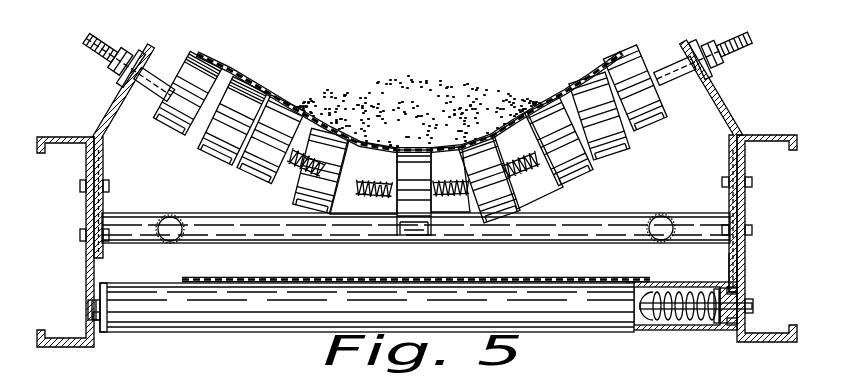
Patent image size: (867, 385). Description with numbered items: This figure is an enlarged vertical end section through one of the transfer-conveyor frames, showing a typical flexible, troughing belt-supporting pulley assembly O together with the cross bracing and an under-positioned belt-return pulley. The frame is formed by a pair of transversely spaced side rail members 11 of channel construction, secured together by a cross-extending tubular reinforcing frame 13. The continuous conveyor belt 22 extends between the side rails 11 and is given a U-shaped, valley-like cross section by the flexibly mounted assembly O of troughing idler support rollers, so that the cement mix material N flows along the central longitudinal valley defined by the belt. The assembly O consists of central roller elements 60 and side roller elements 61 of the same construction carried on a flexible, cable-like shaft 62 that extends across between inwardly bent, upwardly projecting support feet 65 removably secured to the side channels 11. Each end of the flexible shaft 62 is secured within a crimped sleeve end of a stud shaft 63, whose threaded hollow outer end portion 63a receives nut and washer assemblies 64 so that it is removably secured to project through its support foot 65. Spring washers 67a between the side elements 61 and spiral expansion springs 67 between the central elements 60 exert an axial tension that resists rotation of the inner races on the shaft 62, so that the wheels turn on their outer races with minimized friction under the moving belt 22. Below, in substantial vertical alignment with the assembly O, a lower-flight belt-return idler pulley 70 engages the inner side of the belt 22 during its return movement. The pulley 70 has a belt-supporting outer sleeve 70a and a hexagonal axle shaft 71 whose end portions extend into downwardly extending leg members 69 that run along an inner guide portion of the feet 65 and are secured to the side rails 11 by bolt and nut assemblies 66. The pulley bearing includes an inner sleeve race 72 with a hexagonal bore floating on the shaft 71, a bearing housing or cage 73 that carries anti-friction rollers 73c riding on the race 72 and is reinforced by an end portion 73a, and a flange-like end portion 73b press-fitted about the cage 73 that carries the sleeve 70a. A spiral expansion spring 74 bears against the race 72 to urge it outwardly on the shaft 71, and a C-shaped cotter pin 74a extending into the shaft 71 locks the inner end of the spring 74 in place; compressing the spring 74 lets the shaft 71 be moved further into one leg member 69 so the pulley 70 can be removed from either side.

The side rail member 11 is at (42, 137).
The cross-extending reinforcing frame 13 is at (632, 252).
The continuous conveyor belt 22 is at (560, 85).
The central roller element 60 is at (432, 248).
The side roller element 61 is at (222, 162).
The flexible shaft 62 is at (391, 171).
The stud shaft 63 is at (165, 70).
The hollow outer end portion 63a is at (724, 42).
The nut and washer assembly 64 is at (708, 70).
The support foot 65 is at (110, 110).
The bolt and nut assembly 66 is at (755, 185).
The spiral expansion spring 67 is at (298, 175).
The spring washer 67a is at (254, 77).
The leg member 69 is at (732, 264).
The belt-return idler pulley 70 is at (276, 333).
The belt-supporting outer sleeve 70a is at (648, 330).
The hexagonal axle shaft 71 is at (760, 306).
The inner bearing sleeve race 72 is at (746, 300).
The bearing housing or cage 73 is at (735, 328).
The end portion 73a is at (746, 318).
The flange-like end portion 73b is at (714, 323).
The anti-friction bearing rollers 73c is at (736, 292).
The spiral expansion spring 74 is at (668, 322).
The C-shaped cotter pin 74a is at (643, 315).
The cement mix material N is at (430, 70).
The flexible pulley assembly O is at (633, 48).